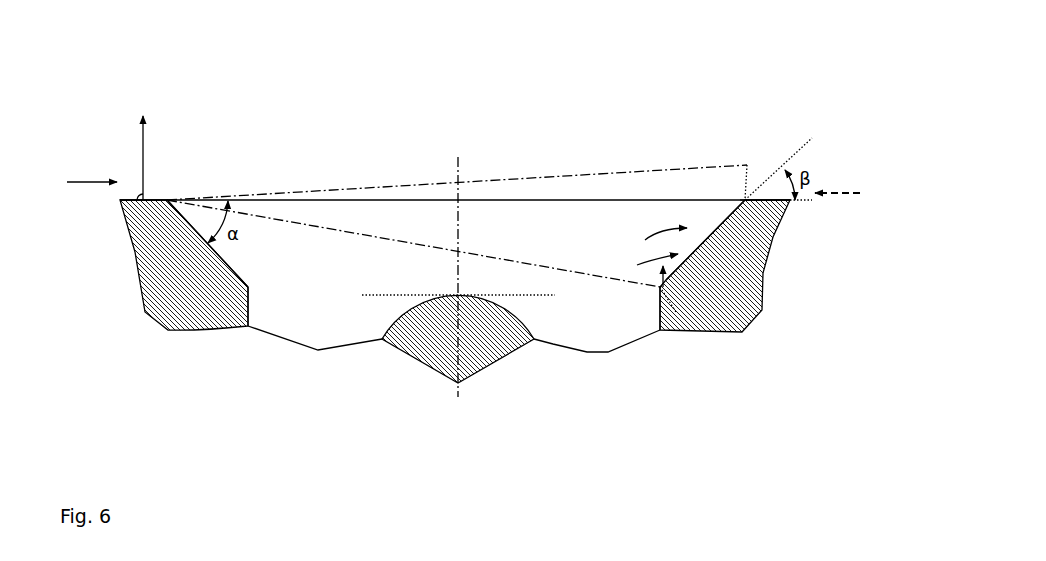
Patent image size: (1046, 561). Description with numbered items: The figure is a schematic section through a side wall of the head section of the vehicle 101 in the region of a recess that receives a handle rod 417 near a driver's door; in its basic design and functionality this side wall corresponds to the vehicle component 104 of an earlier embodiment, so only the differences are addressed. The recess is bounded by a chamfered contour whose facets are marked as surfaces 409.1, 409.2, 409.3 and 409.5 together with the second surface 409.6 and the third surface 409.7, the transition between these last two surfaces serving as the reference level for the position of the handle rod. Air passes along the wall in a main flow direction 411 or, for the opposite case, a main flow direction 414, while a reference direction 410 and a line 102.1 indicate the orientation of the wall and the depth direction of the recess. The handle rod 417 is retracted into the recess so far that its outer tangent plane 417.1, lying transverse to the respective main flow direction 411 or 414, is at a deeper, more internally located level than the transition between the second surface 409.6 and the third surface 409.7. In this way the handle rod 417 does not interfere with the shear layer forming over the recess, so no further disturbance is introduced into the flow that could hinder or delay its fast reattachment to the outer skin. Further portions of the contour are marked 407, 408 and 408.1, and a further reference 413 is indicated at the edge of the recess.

The vehicle 101 is at (783, 60).
The upper surface 102.1 is at (707, 197).
The vehicle component 104 is at (178, 333).
The first wall element 407 is at (162, 202).
The reference plane line 408 is at (308, 186).
The second wall element 408.1 is at (690, 332).
The top face of first wall 409.1 is at (155, 197).
The inclined face of first wall 409.2 is at (193, 225).
The inner face of first wall 409.3 is at (253, 298).
The top face of second wall 409.5 is at (777, 198).
The second surface 409.6 is at (705, 236).
The third surface 409.7 is at (655, 302).
The vertical direction 410 is at (148, 150).
The main flow direction 411 is at (98, 178).
The edge 413 is at (745, 198).
The main flow direction 414 is at (838, 191).
The handle rod 417 is at (427, 370).
The outer tangent plane 417.1 is at (532, 302).